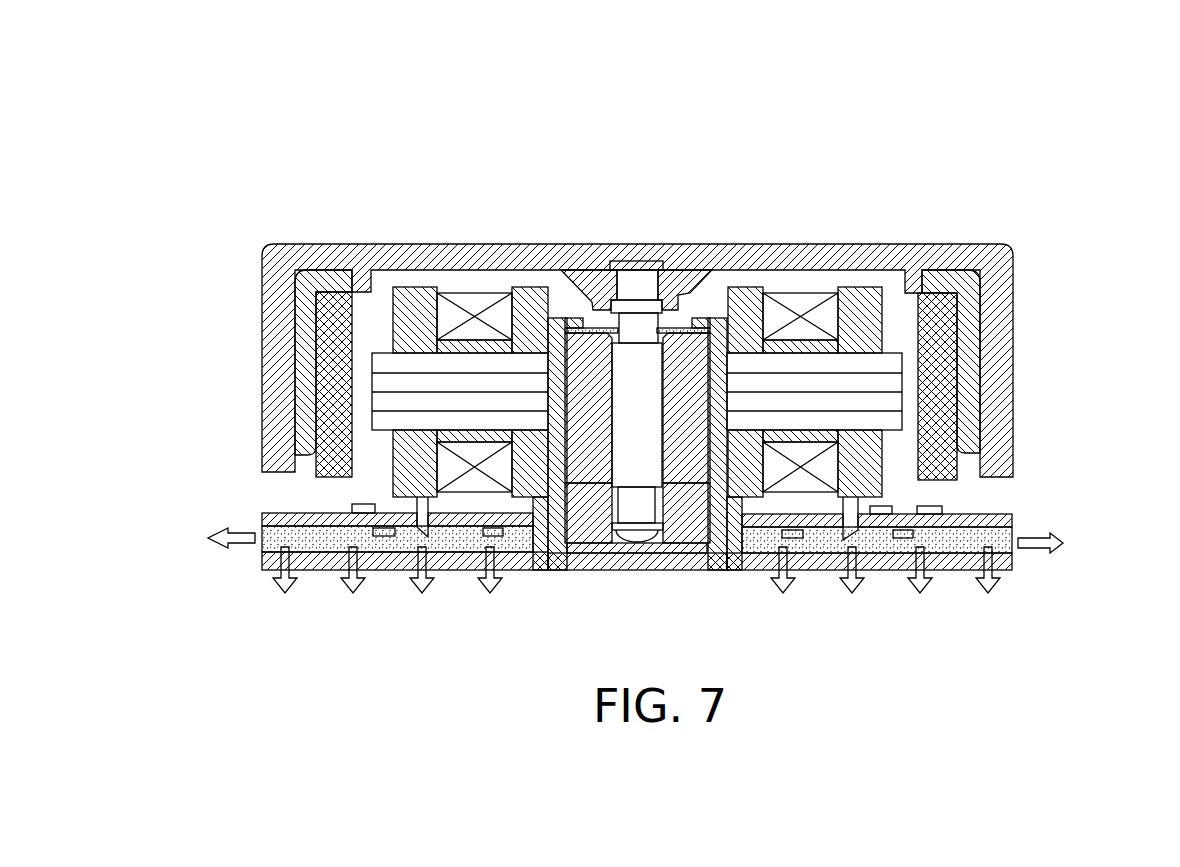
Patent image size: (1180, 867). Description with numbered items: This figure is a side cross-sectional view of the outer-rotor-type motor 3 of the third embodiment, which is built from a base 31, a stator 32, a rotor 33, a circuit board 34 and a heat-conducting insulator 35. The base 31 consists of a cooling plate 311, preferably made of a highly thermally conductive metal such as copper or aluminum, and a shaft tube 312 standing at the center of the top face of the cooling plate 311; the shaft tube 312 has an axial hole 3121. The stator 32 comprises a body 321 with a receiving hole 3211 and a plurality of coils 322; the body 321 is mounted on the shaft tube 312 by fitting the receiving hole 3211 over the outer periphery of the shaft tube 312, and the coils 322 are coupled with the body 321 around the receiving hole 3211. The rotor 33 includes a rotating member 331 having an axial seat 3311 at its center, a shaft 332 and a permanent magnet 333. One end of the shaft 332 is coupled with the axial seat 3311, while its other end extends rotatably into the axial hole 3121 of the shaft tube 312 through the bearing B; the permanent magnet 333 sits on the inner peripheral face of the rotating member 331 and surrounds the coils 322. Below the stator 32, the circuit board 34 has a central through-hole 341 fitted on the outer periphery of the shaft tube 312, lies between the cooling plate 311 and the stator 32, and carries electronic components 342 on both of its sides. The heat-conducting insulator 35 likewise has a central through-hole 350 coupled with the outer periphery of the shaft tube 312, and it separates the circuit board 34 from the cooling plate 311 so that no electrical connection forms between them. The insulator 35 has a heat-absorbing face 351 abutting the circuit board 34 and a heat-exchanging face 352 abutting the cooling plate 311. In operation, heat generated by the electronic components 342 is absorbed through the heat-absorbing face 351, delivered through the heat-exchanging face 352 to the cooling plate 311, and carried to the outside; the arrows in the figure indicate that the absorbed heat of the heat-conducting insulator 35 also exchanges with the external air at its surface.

The outer-rotor-type motor 3 is at (962, 120).
The rotor 33 is at (983, 247).
The permanent magnet 333 is at (965, 315).
The body 321 is at (412, 287).
The coils 322 is at (475, 293).
The stator 32 is at (888, 358).
The shaft tube 312 is at (524, 497).
The axial hole 3121 is at (720, 364).
The bearing B is at (552, 290).
The axial seat 3311 is at (700, 300).
The receiving hole 3211 is at (580, 343).
The rotating member 331 is at (680, 295).
The shaft 332 is at (630, 358).
The through-hole 350 is at (528, 540).
The base 31 is at (735, 530).
The through-hole 341 is at (745, 519).
The circuit board 34 is at (1008, 517).
The electronic components 342 is at (930, 503).
The heat-conducting insulator 35 is at (920, 586).
The heat-absorbing face 351 is at (1010, 532).
The heat-exchanging face 352 is at (918, 607).
The cooling plate 311 is at (885, 566).